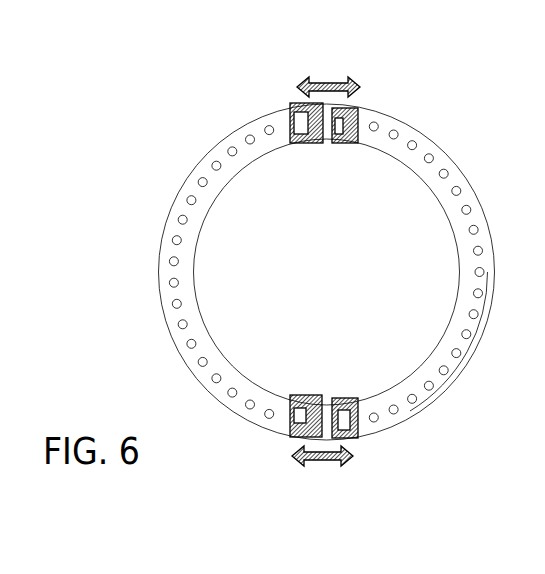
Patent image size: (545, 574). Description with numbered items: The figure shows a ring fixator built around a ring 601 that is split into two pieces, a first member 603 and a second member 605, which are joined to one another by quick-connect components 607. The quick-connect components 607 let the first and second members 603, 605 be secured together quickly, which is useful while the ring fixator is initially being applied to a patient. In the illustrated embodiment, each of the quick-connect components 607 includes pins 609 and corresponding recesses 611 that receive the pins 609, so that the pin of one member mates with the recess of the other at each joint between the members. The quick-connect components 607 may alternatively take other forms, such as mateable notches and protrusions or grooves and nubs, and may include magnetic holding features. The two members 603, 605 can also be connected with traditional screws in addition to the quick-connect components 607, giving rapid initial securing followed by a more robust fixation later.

The ring 601 is at (135, 152).
The first member 603 is at (250, 120).
The second member 605 is at (445, 175).
The quick-connect components 607 is at (298, 248).
The pins 609 is at (340, 145).
The recesses 611 is at (315, 145).